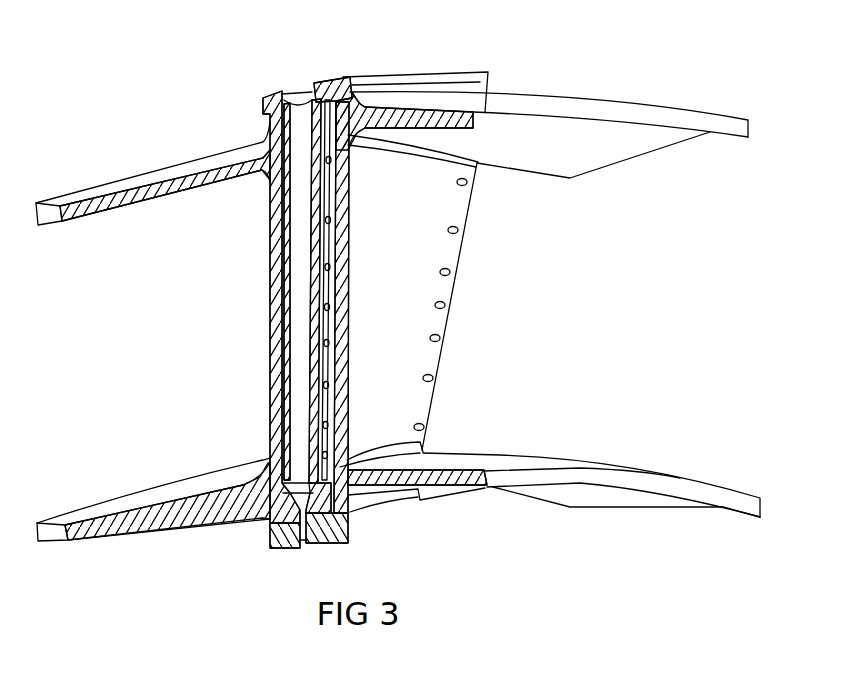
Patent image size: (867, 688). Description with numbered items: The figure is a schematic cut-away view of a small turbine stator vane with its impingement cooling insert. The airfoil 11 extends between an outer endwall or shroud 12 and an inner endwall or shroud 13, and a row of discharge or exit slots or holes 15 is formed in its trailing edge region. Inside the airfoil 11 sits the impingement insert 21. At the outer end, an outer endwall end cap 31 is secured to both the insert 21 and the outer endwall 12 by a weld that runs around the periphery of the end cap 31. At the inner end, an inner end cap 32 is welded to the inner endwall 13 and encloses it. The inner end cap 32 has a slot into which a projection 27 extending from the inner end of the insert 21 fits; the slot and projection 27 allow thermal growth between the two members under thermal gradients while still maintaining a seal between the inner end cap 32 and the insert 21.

The airfoil 11 is at (402, 247).
The outer endwall 12 is at (605, 138).
The inner endwall 13 is at (497, 468).
The exit holes 15 is at (442, 306).
The impingement insert 21 is at (313, 252).
The projection 27 is at (303, 517).
The outer endwall end cap 31 is at (330, 80).
The inner end cap 32 is at (283, 545).